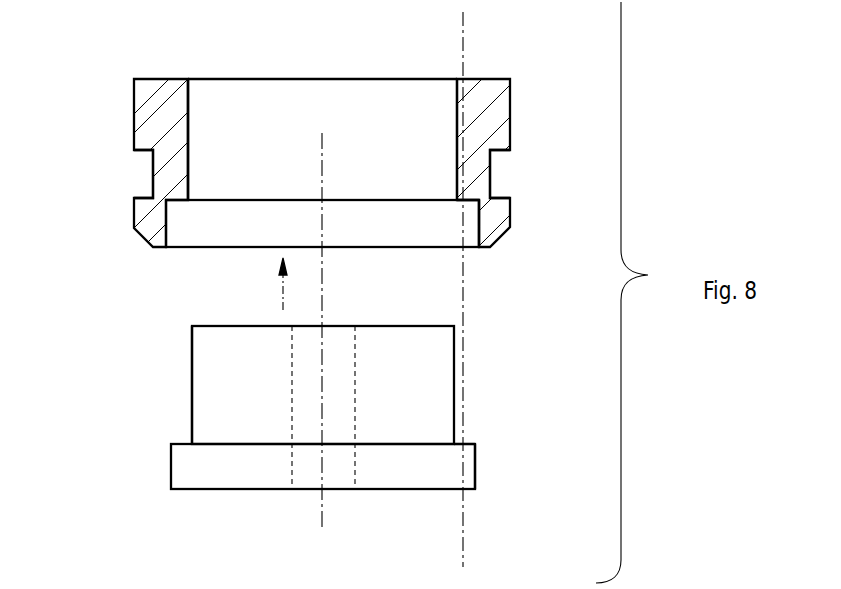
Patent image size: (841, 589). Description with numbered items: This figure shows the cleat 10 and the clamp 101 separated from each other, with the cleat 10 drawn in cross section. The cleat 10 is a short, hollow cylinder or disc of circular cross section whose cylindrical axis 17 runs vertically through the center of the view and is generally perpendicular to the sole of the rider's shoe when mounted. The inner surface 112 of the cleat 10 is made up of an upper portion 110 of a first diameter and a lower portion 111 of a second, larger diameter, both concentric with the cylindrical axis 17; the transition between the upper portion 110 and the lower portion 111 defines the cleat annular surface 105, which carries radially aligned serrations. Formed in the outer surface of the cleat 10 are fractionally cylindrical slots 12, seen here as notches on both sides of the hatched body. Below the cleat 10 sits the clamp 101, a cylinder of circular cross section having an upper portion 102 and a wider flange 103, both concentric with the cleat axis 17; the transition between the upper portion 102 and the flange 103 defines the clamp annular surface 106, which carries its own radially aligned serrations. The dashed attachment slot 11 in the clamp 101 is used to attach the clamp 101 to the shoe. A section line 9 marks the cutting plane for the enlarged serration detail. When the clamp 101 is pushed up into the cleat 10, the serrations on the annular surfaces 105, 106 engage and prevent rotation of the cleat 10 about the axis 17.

The section line 9- 9 is at (443, 12).
The cleat 10 is at (483, 105).
The attachment slot 11 is at (292, 468).
The fractionally cylindrical slot 12 is at (146, 173).
The cylindrical axis 17 is at (325, 348).
The clamp 101 is at (416, 384).
The upper portion 102 is at (192, 371).
The flange 103 is at (172, 462).
The cleat annular surface 105 is at (465, 200).
The clamp annular surface 106 is at (468, 443).
The upper portion 110 is at (284, 169).
The lower portion 111 is at (262, 231).
The inner surface 112 is at (188, 117).